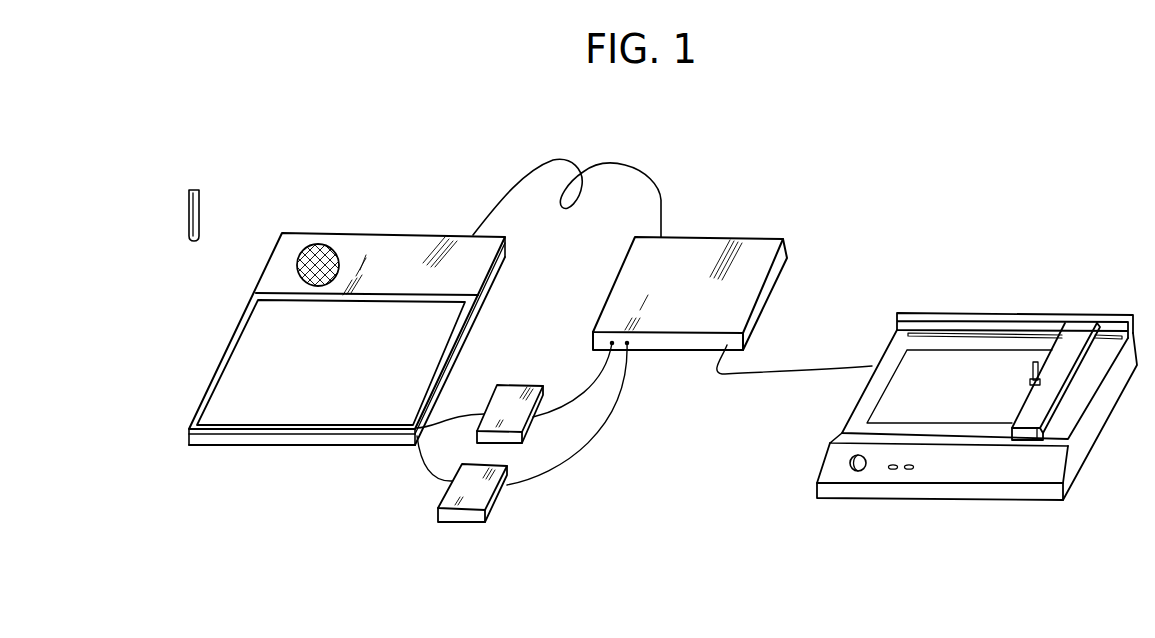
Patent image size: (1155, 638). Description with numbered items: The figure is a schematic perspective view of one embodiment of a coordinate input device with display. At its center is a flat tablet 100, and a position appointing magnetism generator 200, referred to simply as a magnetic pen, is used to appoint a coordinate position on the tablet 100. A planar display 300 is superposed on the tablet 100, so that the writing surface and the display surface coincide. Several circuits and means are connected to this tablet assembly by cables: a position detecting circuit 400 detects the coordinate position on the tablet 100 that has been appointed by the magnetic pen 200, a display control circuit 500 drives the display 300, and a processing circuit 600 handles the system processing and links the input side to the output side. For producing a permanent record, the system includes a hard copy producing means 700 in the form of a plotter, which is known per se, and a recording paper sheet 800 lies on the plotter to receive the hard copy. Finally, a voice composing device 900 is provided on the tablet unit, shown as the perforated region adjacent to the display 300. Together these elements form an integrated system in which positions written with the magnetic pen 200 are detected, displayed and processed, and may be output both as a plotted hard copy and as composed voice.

The tablet 100 is at (225, 444).
The position appointing magnetism generator 200 is at (200, 212).
The planar display 300 is at (240, 368).
The position detecting circuit 400 is at (462, 520).
The display control circuit 500 is at (528, 383).
The processing circuit 600 is at (742, 237).
The hard copy producing means 700 is at (1017, 313).
The recording paper sheet 800 is at (862, 422).
The voice composing device 900 is at (410, 240).